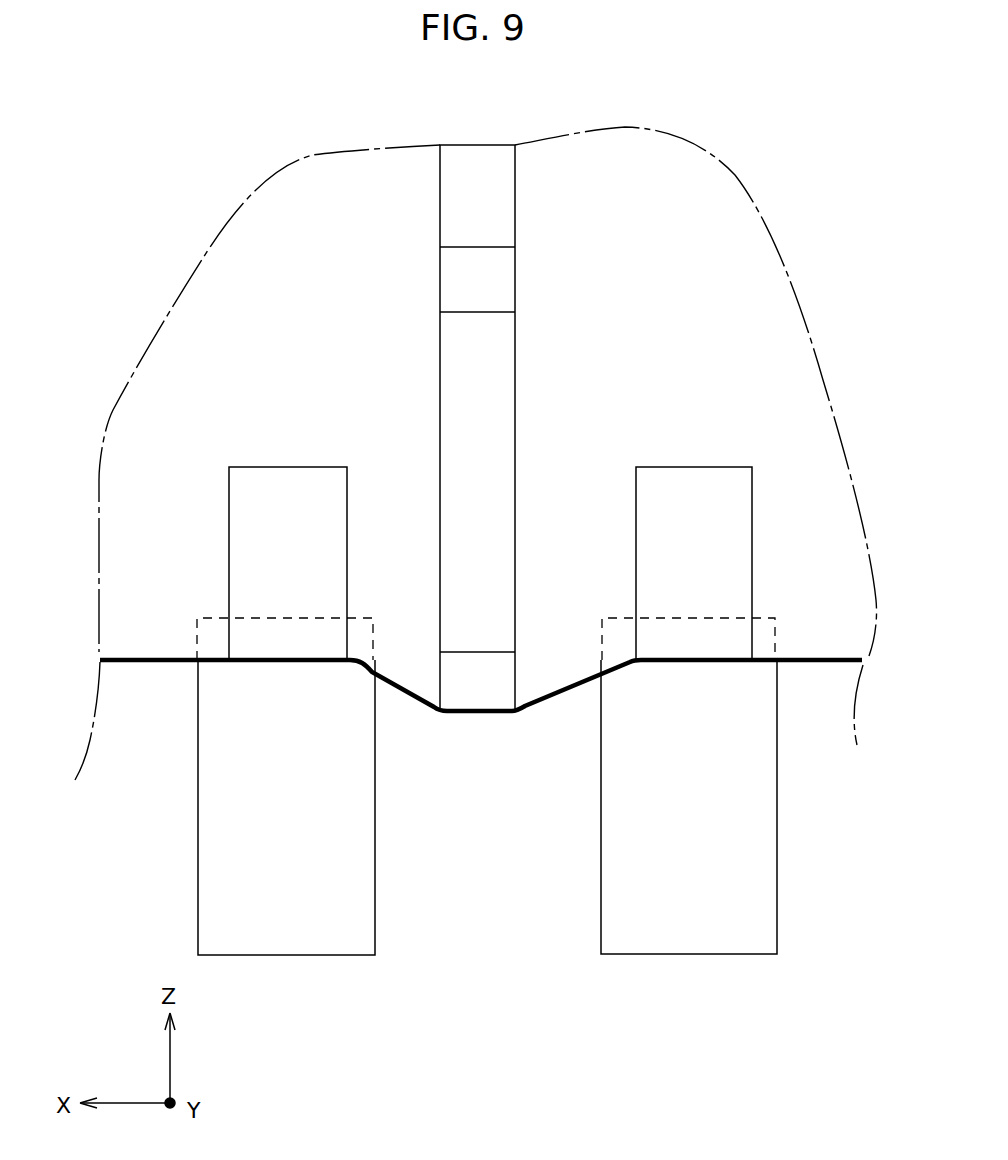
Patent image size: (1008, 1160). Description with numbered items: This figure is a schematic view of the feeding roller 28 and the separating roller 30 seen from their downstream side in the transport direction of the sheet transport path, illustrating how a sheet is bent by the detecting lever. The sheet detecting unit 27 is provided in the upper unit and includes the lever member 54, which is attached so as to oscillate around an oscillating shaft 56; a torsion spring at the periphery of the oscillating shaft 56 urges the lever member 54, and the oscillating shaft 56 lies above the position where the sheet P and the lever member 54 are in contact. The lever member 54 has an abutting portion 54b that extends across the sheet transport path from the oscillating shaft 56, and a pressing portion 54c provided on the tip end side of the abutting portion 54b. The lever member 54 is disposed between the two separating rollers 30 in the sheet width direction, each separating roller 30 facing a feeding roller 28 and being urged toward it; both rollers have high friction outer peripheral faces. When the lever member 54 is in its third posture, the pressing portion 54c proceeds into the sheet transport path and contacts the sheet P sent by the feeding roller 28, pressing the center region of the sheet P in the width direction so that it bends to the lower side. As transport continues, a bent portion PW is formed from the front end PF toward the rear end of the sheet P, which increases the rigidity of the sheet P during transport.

The sheet detecting unit 27 is at (540, 198).
The lever member 54 is at (440, 205).
The oscillating shaft 56 is at (508, 263).
The abutting portion 54b is at (485, 378).
The pressing portion 54c is at (475, 688).
The separating roller 30 is at (284, 497).
The feeding roller 28 is at (285, 940).
The sheet P is at (593, 678).
The bent portion PW is at (530, 713).
The front end PF is at (801, 663).